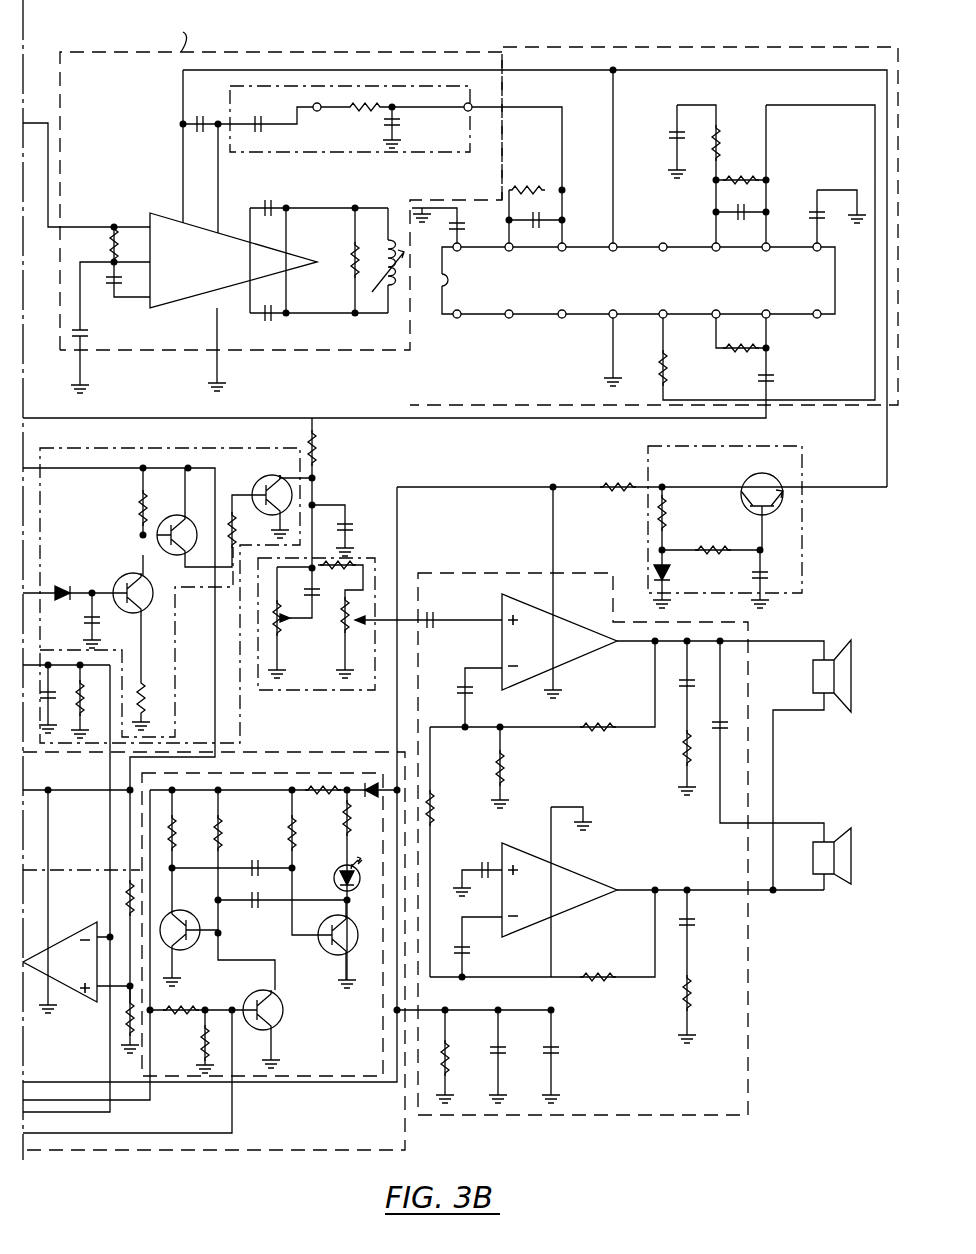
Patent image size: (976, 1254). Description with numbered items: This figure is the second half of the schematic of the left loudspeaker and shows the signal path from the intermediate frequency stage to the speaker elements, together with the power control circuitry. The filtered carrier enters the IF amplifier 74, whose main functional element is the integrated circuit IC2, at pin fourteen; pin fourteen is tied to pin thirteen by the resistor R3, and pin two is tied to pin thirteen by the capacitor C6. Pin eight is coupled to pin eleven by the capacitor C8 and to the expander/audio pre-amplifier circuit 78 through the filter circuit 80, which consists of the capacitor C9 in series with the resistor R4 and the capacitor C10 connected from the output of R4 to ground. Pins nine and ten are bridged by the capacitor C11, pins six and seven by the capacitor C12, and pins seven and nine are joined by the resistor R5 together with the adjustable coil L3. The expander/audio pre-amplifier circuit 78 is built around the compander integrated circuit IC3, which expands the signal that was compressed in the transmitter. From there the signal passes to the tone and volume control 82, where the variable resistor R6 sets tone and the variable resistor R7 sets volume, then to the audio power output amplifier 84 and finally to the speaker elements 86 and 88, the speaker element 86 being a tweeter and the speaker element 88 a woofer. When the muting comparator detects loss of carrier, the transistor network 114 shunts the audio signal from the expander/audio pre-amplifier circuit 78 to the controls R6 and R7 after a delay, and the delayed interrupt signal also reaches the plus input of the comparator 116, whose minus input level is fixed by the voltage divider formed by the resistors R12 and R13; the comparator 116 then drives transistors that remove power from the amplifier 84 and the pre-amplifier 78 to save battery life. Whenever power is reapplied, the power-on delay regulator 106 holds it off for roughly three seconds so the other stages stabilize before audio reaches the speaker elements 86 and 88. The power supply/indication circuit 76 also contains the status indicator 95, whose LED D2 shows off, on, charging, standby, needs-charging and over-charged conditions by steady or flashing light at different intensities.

The intermediate frequency (IF) amplifier 74 is at (294, 52).
The expander/audio pre-amplifier circuit 78 is at (502, 47).
The filter circuit 80 is at (383, 153).
The tone and volume control 82 is at (350, 560).
The audio power output amplifier 84 is at (482, 573).
The speaker element 86 is at (840, 882).
The speaker element 88 is at (835, 700).
The status indicator 95 is at (332, 1082).
The power-on delay regulator 106 is at (648, 449).
The transistor network 114 is at (43, 450).
The comparator 116 is at (66, 932).
The power supply/indication circuit 76 is at (354, 754).
The capacitor C8 is at (200, 115).
The capacitor C9 is at (265, 115).
The capacitor C10 is at (405, 127).
The capacitor C11 is at (319, 248).
The capacitor C12 is at (319, 320).
The capacitor C6 is at (128, 278).
The resistor R3 is at (95, 244).
The resistor R4 is at (392, 118).
The resistor R5 is at (346, 260).
The variable resistor R6 is at (290, 622).
The variable resistor R7 is at (343, 619).
The resistor R12 is at (125, 895).
The resistor R13 is at (126, 1019).
The adjustable coil L3 is at (385, 260).
The LED D2 is at (332, 874).
The integrated circuit IC2 is at (233, 266).
The compander integrated circuit IC3 is at (638, 280).